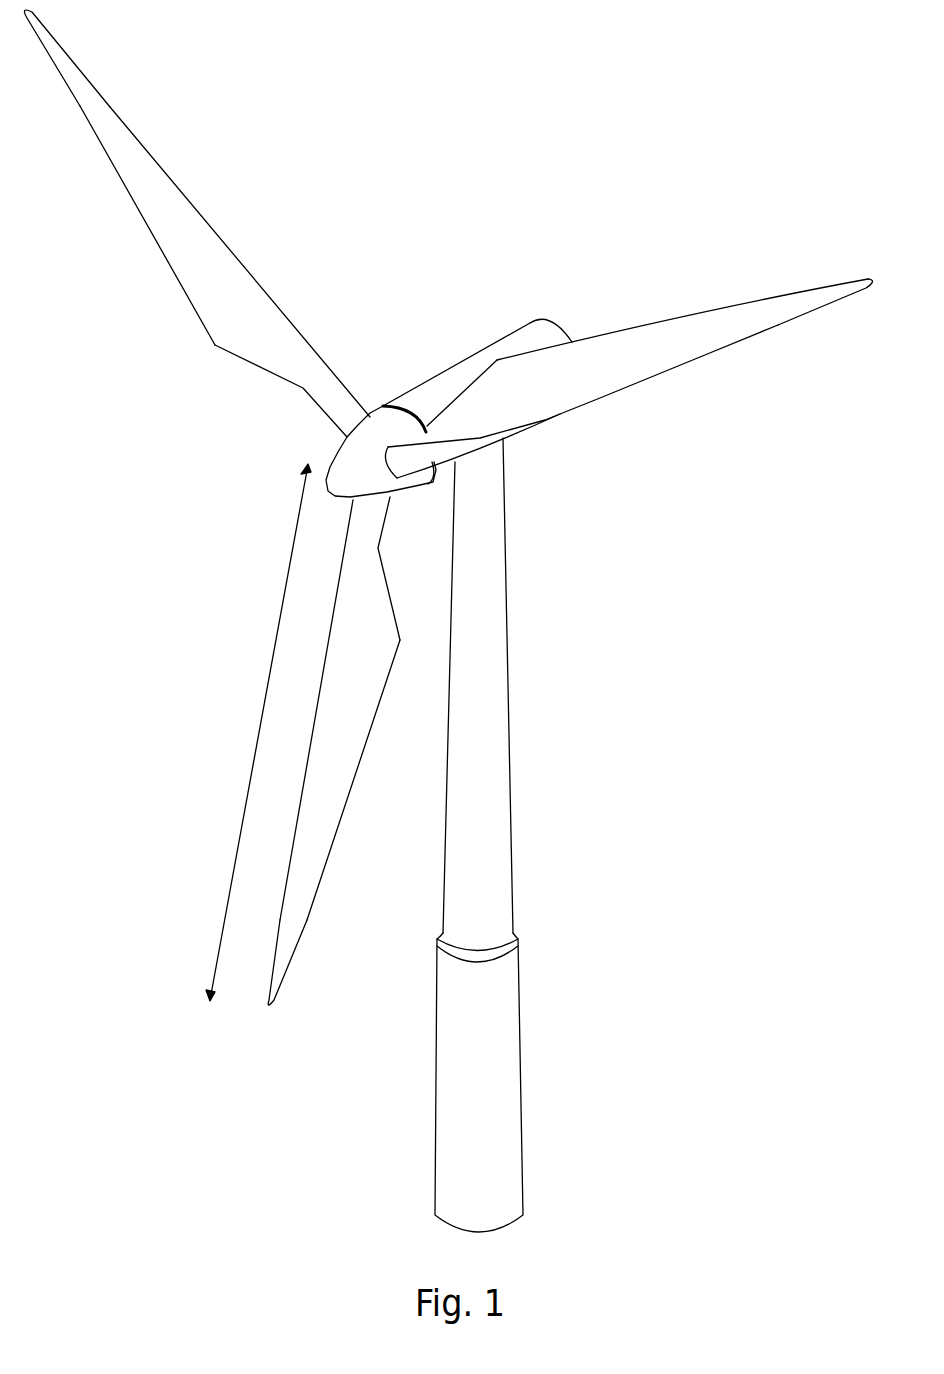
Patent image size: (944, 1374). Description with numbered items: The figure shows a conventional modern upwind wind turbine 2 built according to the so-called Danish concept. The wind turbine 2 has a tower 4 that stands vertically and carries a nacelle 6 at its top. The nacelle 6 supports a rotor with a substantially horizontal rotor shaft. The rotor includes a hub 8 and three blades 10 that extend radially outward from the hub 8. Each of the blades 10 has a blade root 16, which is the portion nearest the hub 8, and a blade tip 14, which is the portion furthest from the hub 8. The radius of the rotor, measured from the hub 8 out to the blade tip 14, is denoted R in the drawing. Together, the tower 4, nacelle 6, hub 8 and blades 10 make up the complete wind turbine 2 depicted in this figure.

The wind turbine 2 is at (607, 774).
The tower 4 is at (497, 690).
The nacelle 6 is at (443, 387).
The hub 8 is at (341, 466).
The blade 10 is at (232, 320).
The blade tip 14 is at (70, 68).
The blade root 16 is at (353, 426).